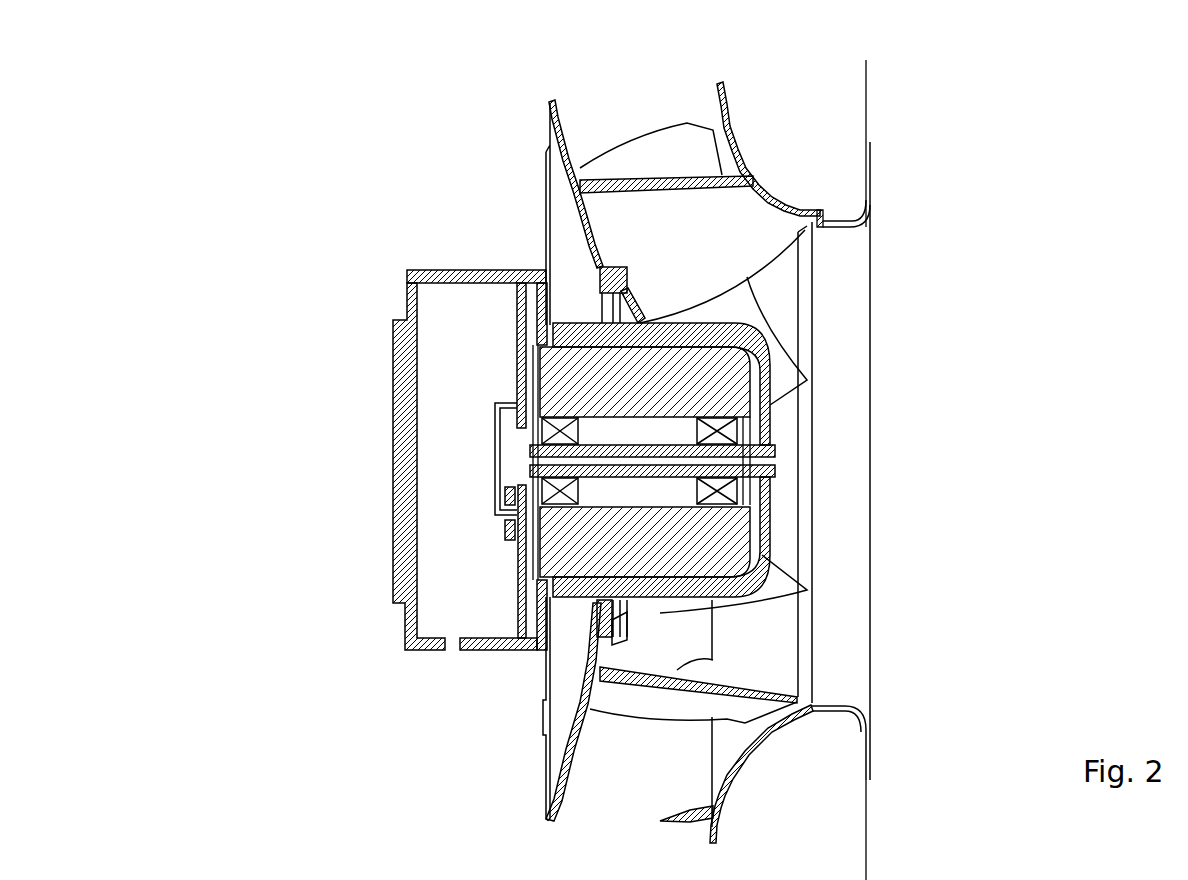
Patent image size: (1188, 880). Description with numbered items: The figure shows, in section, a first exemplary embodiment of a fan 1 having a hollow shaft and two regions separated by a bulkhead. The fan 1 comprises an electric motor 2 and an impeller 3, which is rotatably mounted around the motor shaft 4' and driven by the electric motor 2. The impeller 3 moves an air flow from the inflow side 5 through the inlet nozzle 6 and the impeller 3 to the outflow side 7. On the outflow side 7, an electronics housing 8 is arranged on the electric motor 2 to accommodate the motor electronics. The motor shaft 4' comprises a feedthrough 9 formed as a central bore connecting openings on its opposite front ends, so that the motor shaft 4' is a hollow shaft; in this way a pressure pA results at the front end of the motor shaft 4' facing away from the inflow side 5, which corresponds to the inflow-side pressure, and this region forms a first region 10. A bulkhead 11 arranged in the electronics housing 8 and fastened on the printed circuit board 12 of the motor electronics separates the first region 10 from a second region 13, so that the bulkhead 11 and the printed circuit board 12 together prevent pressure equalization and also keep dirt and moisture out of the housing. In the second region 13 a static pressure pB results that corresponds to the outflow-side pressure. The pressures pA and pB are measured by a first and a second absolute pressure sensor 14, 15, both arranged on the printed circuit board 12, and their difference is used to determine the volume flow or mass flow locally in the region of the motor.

The fan 1 is at (453, 120).
The electric motor 2 is at (577, 603).
The impeller 3 is at (747, 190).
The motor shaft 4' is at (732, 460).
The inflow side 5 is at (1122, 427).
The inlet nozzle 6 is at (873, 227).
The outflow side 7 is at (203, 424).
The electronics housing 8 is at (452, 277).
The feedthrough 9 is at (770, 463).
The first region 10 is at (517, 468).
The bulkhead 11 is at (508, 433).
The printed circuit board 12 is at (523, 290).
The second region 13 is at (437, 482).
The first absolute pressure sensor 14 is at (500, 497).
The second absolute pressure sensor 15 is at (503, 533).
The pressure pA is at (517, 452).
The pressure pB is at (417, 671).